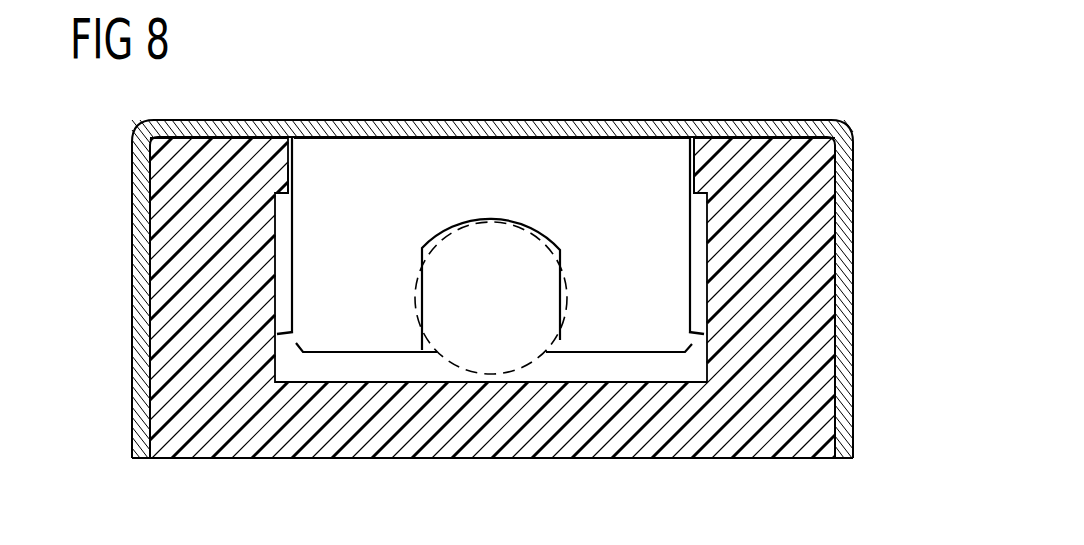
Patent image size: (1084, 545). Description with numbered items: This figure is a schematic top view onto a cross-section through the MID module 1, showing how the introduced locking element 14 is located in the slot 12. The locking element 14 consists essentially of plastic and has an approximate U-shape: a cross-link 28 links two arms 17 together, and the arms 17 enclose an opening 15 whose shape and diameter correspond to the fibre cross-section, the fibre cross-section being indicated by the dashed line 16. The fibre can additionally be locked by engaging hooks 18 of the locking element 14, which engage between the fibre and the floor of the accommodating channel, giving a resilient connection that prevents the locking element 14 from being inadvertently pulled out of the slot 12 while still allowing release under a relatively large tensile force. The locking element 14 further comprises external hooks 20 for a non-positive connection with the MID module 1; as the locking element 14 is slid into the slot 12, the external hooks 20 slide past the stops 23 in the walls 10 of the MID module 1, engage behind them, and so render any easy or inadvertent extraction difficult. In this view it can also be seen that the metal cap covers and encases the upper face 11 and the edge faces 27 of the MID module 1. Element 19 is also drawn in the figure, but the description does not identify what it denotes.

The MID module 1 is at (892, 138).
The walls 10 is at (236, 156).
The upper face 11 is at (560, 129).
The slot 12 is at (283, 252).
The locking element 14 is at (655, 156).
The opening 15 is at (457, 298).
The dashed line 16 is at (413, 307).
The arms 17 is at (328, 340).
The engaging hooks 18 is at (560, 347).
The ball seat 19 is at (560, 289).
The external hooks 20 is at (297, 343).
The stops 23 is at (283, 173).
The edge faces 27 is at (143, 228).
The cross-link 28 is at (410, 156).